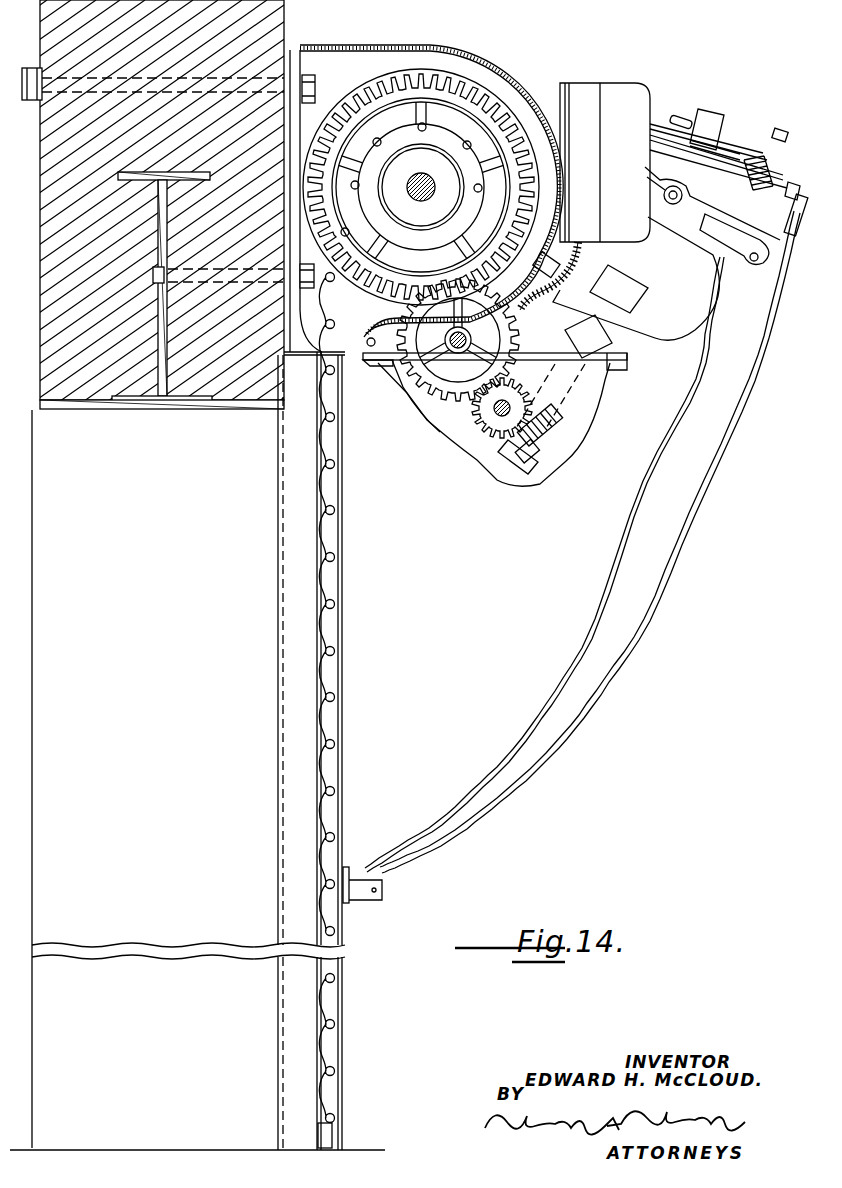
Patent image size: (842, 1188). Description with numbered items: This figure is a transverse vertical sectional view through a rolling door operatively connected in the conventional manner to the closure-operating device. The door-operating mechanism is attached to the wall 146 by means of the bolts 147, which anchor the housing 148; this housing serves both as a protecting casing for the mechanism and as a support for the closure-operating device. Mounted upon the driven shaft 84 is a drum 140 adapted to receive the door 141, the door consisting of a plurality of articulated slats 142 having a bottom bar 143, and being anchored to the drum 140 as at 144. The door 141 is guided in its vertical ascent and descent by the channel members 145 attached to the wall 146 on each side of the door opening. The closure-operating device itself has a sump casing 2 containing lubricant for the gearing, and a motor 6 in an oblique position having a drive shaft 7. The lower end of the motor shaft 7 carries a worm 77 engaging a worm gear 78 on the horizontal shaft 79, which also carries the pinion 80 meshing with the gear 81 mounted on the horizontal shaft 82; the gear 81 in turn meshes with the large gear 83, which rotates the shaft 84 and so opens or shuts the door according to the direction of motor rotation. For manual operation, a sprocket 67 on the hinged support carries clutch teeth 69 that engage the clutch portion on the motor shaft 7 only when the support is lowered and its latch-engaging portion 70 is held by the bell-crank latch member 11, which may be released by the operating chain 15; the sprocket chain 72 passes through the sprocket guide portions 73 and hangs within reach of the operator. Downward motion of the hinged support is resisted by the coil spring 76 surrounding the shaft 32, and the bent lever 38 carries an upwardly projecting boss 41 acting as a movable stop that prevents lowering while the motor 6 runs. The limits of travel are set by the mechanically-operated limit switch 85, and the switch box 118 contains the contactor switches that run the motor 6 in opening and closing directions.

The sump casing 2 is at (587, 404).
The motor 6 is at (656, 328).
The drive shaft 7 is at (562, 396).
The latch member 11 is at (747, 246).
The operating chain 15 is at (660, 456).
The shaft 32 is at (783, 128).
The bent lever 38 is at (755, 158).
The upwardly projecting boss 41 is at (790, 202).
The sprocket 67 is at (684, 118).
The clutch teeth 69 is at (703, 140).
The latch-engaging portion 70 is at (792, 235).
The sprocket chain 72 is at (746, 406).
The sprocket guide portions 73 is at (740, 126).
The coil spring 76 is at (766, 130).
The worm 77 is at (552, 434).
The worm gear 78 is at (500, 452).
The horizontal shaft 79 is at (492, 411).
The pinion 80 is at (482, 434).
The gear 81 is at (440, 392).
The horizontal shaft 82 is at (470, 338).
The large gear 83 is at (487, 103).
The shaft 84 is at (427, 177).
The limit switch 85 is at (542, 337).
The switch box 118 is at (622, 92).
The drum 140 is at (408, 128).
The door 141 is at (336, 583).
The articulated slats 142 is at (338, 638).
The bottom bar 143 is at (333, 1140).
The anchorage 144 is at (481, 194).
The channel members 145 is at (343, 748).
The wall 146 is at (58, 402).
The bolts 147 is at (318, 88).
The housing 148 is at (458, 46).